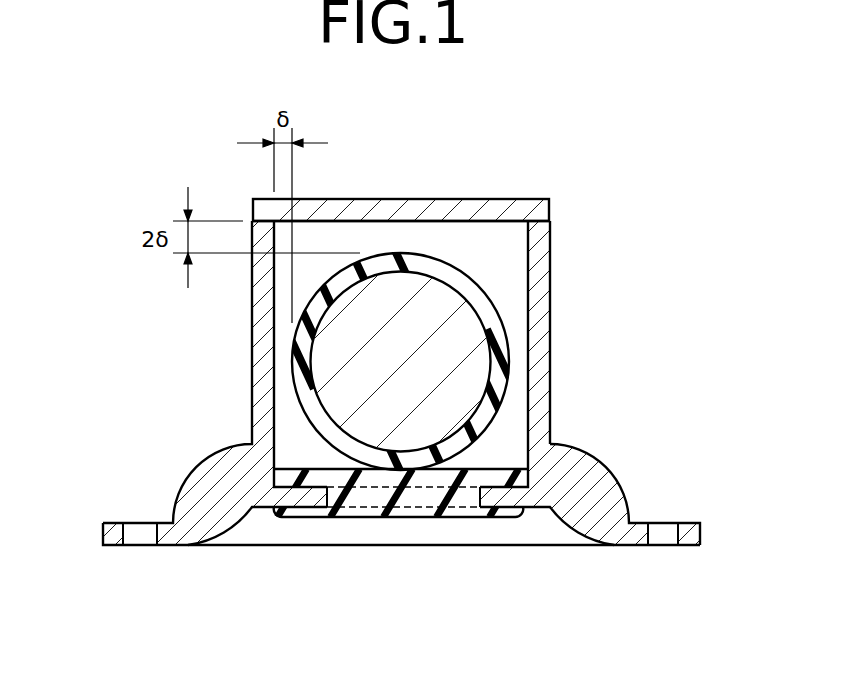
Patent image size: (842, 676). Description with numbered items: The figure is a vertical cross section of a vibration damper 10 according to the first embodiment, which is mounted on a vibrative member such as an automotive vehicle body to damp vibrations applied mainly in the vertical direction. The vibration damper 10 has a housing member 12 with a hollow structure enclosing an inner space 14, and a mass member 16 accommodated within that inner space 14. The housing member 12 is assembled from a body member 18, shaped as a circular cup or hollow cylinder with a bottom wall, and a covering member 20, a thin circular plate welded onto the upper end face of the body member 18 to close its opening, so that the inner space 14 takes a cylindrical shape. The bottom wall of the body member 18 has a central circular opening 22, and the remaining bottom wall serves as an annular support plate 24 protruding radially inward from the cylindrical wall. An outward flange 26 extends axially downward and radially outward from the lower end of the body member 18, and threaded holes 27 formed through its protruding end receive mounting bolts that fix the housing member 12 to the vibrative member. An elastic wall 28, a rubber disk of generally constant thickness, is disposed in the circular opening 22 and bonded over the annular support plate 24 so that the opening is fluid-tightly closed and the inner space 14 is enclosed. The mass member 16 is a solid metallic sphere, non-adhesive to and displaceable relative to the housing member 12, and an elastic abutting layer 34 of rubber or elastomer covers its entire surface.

The vibration damper 10 is at (593, 190).
The housing member 12 is at (238, 354).
The inner space 14 is at (484, 268).
The mass member 16 is at (302, 416).
The body member 18 is at (537, 353).
The covering member 20 is at (460, 211).
The circular opening 22 is at (473, 500).
The annular support plate 24 is at (528, 468).
The outward flange 26 is at (630, 533).
The threaded holes 27 is at (137, 547).
The elastic wall 28 is at (363, 488).
The abutting layer 34 is at (483, 302).